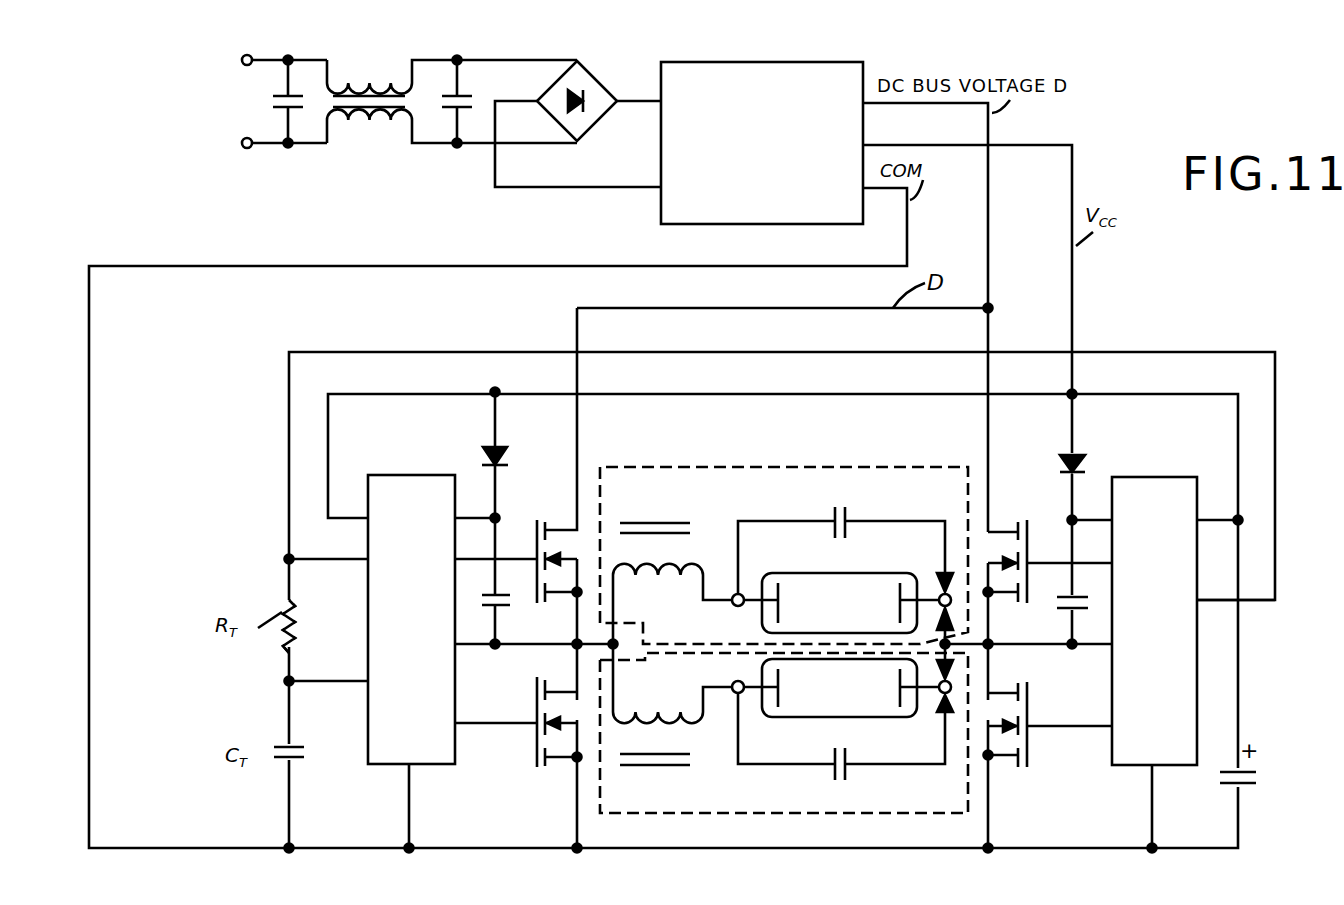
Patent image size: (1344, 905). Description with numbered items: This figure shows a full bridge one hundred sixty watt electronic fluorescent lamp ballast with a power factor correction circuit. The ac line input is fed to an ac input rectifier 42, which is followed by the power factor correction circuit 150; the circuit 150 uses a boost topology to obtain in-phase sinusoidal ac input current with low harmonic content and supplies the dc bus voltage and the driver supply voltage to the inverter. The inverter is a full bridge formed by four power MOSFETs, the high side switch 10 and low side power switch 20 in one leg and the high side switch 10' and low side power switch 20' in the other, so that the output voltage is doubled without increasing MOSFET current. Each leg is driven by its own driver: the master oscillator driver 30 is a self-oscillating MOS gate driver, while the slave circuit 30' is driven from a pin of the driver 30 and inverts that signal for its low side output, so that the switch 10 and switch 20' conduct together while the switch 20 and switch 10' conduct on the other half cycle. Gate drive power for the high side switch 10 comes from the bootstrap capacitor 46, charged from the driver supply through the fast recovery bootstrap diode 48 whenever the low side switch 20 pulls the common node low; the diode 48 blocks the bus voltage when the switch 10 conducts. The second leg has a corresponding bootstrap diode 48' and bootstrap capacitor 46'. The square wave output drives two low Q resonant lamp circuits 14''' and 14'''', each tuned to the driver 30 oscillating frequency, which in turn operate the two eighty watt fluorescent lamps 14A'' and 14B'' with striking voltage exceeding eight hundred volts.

The ac input rectifier 42 is at (591, 71).
The power factor correction circuit 150 is at (766, 32).
The master oscillator driver 30 is at (451, 640).
The bootstrap diode 48 is at (513, 445).
The high side switch 10 is at (546, 455).
The bootstrap capacitor 46 is at (513, 614).
The low side power switch 20 is at (527, 748).
The lamp circuit 14''' is at (794, 533).
The fluorescent lamp 14A'' is at (841, 585).
The fluorescent lamp 14B'' is at (828, 733).
The lamp circuit 14'''' is at (784, 768).
The bootstrap diode 48' is at (1042, 447).
The high side switch 10' is at (1016, 546).
The slave circuit 30' is at (1131, 645).
The bootstrap capacitor 46' is at (1044, 619).
The low side power switch 20' is at (1021, 753).